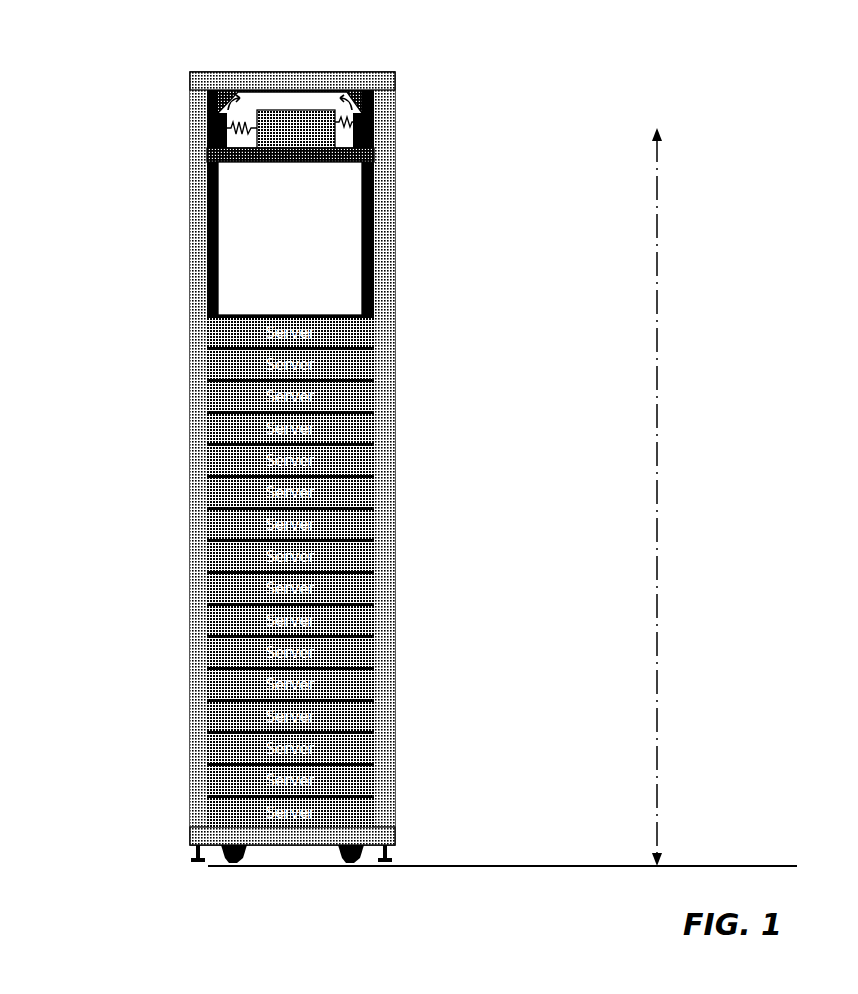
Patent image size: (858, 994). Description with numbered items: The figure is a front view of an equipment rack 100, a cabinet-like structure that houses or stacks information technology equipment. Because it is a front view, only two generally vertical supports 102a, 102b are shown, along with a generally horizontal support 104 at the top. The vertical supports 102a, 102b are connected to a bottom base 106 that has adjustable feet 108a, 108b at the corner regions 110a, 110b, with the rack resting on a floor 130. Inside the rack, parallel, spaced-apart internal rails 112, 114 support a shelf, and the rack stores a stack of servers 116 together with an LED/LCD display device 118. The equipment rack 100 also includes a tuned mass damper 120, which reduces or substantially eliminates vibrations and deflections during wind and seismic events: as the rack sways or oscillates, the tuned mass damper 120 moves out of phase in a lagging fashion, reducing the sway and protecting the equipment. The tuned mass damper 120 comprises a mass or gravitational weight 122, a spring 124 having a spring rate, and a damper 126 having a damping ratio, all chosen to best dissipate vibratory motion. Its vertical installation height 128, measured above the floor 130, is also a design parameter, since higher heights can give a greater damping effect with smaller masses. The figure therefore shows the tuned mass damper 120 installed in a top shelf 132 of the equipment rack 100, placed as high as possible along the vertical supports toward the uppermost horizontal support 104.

The equipment rack 100 is at (190, 313).
The vertical support 102a is at (190, 625).
The vertical support 102b is at (395, 628).
The horizontal support 104 is at (228, 72).
The bottom base 106 is at (292, 845).
The adjustable foot 108a is at (195, 857).
The adjustable foot 108b is at (400, 853).
The corner region 110a is at (179, 863).
The corner region 110b is at (453, 824).
The internal rail 112 is at (192, 158).
The shelf 114 is at (383, 157).
The server 116 is at (375, 397).
The LED/LCD display device 118 is at (354, 257).
The tuned mass damper 120 is at (398, 113).
The mass 122 is at (295, 110).
The spring 124 is at (233, 110).
The damper 126 is at (360, 100).
The height 128 is at (688, 483).
The floor 130 is at (763, 866).
The top shelf 132 is at (192, 153).